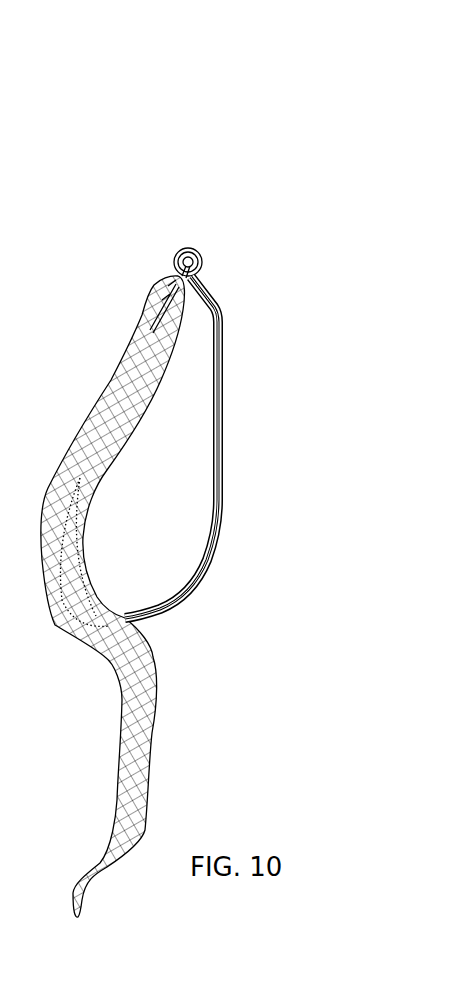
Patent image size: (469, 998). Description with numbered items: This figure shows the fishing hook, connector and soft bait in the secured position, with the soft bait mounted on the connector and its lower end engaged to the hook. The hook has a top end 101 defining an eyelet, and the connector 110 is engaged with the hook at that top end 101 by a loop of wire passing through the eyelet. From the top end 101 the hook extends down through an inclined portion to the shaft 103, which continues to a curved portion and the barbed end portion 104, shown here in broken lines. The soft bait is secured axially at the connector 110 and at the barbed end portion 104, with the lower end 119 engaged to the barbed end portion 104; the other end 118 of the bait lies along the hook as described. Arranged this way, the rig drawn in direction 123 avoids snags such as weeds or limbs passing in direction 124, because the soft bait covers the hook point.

The top end 101 is at (200, 262).
The shaft 103 is at (188, 602).
The barbed end portion 104 is at (63, 567).
The connector 110 is at (168, 282).
The lower end 118 is at (138, 320).
The lower end 119 is at (73, 625).
The direction 123 is at (190, 237).
The direction 124 is at (48, 713).